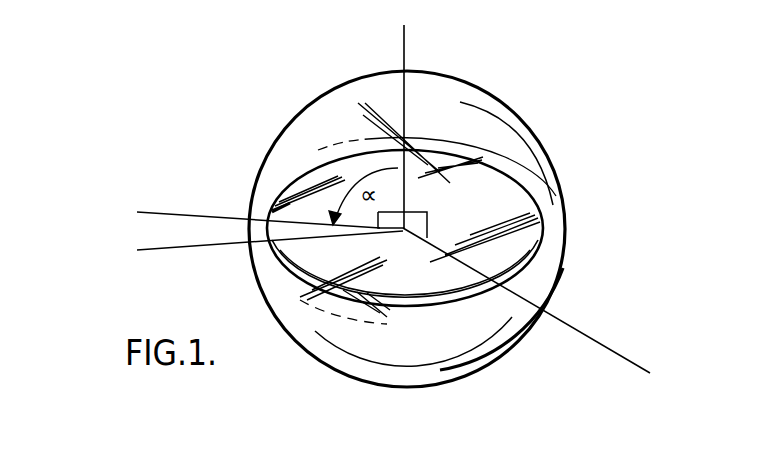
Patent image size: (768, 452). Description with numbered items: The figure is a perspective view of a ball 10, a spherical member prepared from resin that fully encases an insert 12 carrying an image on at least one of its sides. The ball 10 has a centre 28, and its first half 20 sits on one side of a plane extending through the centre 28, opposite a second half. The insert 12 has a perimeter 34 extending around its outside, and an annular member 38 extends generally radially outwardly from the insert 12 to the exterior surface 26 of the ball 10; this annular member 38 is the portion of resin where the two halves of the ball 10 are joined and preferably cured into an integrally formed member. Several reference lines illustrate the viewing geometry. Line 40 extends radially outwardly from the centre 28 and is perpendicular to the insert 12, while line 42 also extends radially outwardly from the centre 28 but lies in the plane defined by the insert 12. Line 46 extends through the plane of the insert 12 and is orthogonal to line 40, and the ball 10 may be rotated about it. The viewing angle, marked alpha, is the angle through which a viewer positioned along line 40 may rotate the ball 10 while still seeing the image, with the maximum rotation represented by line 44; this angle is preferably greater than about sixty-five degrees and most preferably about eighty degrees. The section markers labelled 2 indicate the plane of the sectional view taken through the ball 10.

The ball 10 is at (536, 100).
The first half 20 is at (312, 130).
The insert 12 is at (500, 207).
The perimeter 34 is at (287, 183).
The annular member 38 is at (558, 221).
The line 40 is at (431, 121).
The line 42 is at (267, 261).
The line 44 is at (255, 201).
The line 46 is at (530, 318).
The centre 28 is at (401, 240).
The exterior surface 26 is at (580, 279).
The section line 2- 2 is at (78, 258).